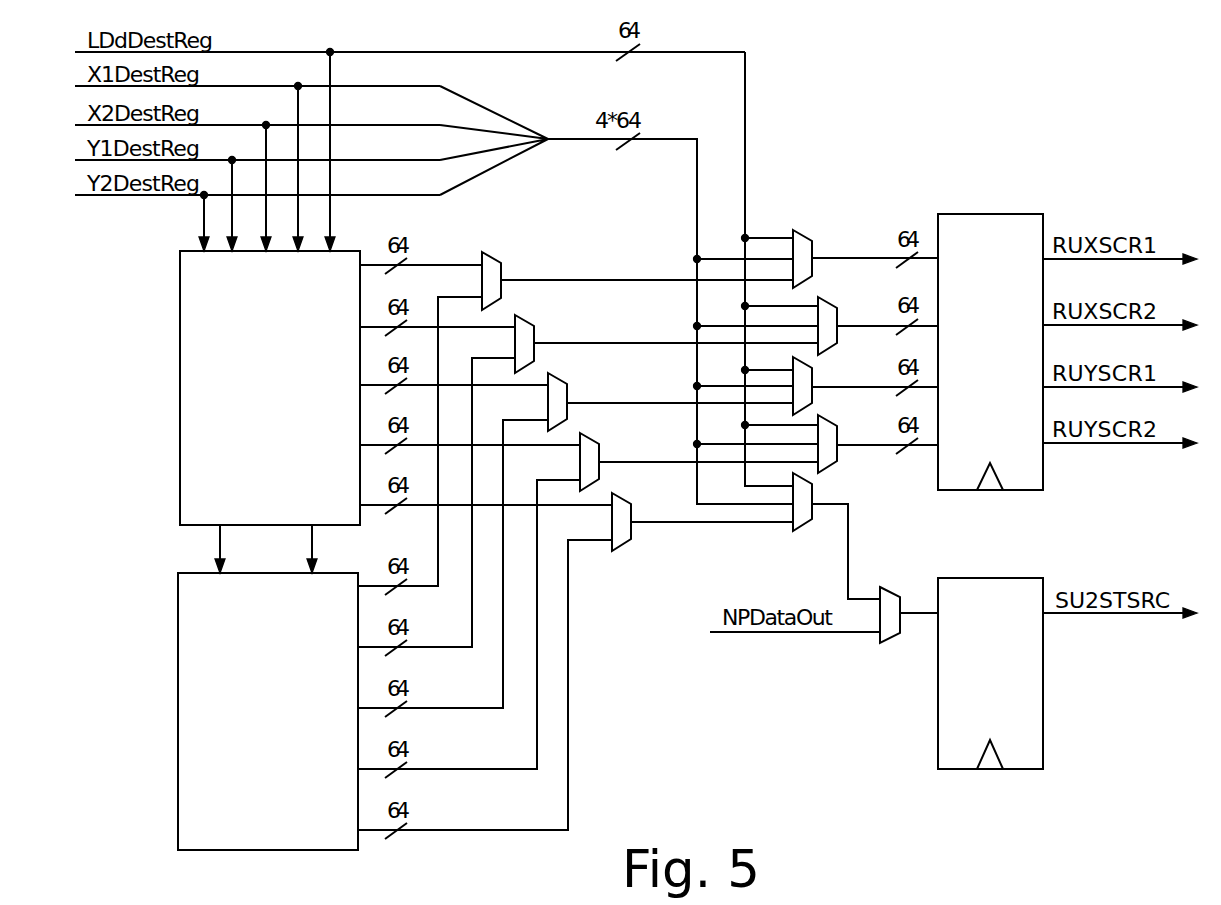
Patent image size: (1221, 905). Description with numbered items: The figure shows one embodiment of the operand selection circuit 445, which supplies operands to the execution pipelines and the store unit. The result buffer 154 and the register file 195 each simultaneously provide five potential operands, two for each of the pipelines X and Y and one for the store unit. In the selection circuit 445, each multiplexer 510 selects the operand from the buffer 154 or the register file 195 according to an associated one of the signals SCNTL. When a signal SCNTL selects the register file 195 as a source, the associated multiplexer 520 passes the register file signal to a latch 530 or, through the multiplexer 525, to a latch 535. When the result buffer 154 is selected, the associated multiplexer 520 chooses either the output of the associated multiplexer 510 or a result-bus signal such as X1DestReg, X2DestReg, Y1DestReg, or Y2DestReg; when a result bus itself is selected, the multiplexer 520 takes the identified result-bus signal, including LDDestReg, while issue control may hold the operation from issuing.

The result buffer 154 is at (253, 433).
The register file 195 is at (250, 772).
The operand selection circuit 445 is at (1022, 107).
The multiplexer 510 is at (516, 260).
The multiplexer 520 is at (813, 250).
The multiplexer 525 is at (901, 604).
The latch 530 is at (972, 365).
The latch 535 is at (972, 687).